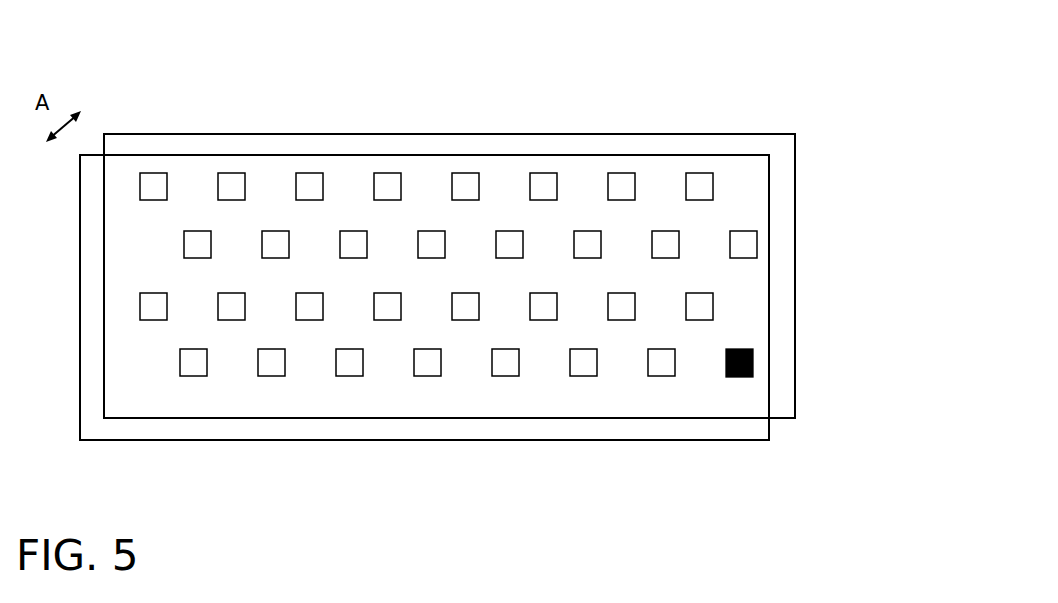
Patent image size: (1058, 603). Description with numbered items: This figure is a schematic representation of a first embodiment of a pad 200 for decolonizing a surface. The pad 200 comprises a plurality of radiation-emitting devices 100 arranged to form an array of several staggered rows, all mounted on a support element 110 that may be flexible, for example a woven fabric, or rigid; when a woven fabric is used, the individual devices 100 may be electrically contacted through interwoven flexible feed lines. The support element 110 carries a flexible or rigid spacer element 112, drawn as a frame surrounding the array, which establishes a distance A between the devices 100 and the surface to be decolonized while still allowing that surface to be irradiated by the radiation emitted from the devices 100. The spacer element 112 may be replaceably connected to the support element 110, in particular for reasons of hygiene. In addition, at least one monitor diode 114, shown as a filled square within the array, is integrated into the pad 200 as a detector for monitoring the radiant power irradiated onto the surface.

The pad 200 is at (777, 105).
The device 100 is at (742, 244).
The support element 110 is at (783, 311).
The spacer element 112 is at (750, 434).
The monitor diode 114 is at (753, 357).